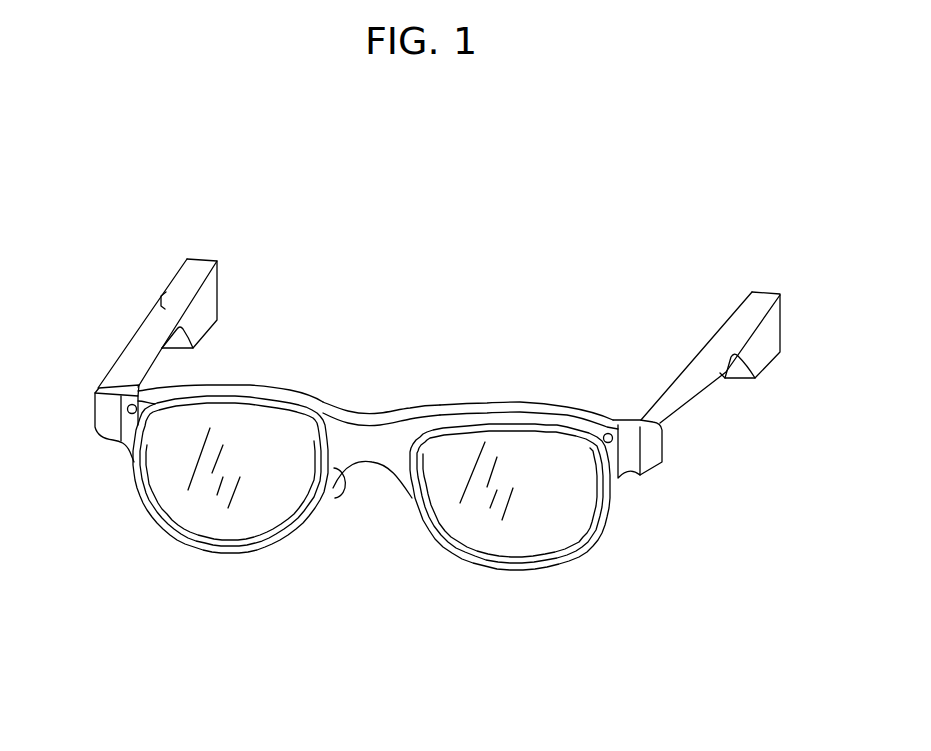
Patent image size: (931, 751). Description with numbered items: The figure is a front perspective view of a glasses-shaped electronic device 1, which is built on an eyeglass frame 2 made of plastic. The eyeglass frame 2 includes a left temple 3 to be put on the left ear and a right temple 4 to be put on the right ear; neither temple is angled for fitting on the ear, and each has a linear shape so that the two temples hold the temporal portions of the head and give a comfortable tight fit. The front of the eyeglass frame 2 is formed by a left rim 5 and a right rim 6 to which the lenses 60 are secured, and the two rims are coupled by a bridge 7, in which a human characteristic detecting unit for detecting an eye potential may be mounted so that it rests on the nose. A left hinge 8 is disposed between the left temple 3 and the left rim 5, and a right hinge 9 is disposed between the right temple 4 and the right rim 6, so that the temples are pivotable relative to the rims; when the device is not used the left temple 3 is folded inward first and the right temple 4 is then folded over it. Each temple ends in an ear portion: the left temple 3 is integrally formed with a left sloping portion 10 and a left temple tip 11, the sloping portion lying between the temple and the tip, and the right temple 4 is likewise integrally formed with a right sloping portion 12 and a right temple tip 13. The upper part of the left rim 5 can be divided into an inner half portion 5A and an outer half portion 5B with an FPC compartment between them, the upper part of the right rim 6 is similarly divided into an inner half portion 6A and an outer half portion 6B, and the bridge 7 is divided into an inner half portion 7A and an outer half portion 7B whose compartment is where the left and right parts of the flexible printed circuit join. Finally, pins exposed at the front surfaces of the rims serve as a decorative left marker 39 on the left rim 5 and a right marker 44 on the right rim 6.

The glasses-shaped electronic device 1 is at (611, 263).
The eyeglass frame 2 is at (674, 413).
The left temple 3 is at (697, 385).
The right temple 4 is at (139, 339).
The left rim 5 is at (557, 337).
The inner half portion 5A is at (482, 404).
The outer half portion 5B is at (520, 414).
The right rim 6 is at (328, 322).
The inner half portion 6A is at (257, 386).
The outer half portion 6B is at (275, 403).
The bridge 7 is at (430, 346).
The inner half portion 7A is at (357, 412).
The outer half portion 7B is at (392, 437).
The left hinge 8 is at (635, 478).
The right hinge 9 is at (93, 423).
The left sloping portion 10 is at (743, 352).
The left temple tip 11 is at (770, 322).
The right sloping portion 12 is at (161, 303).
The right temple tip 13 is at (178, 283).
The left marker 39 is at (616, 416).
The right marker 44 is at (95, 400).
The lenses 60 is at (252, 517).